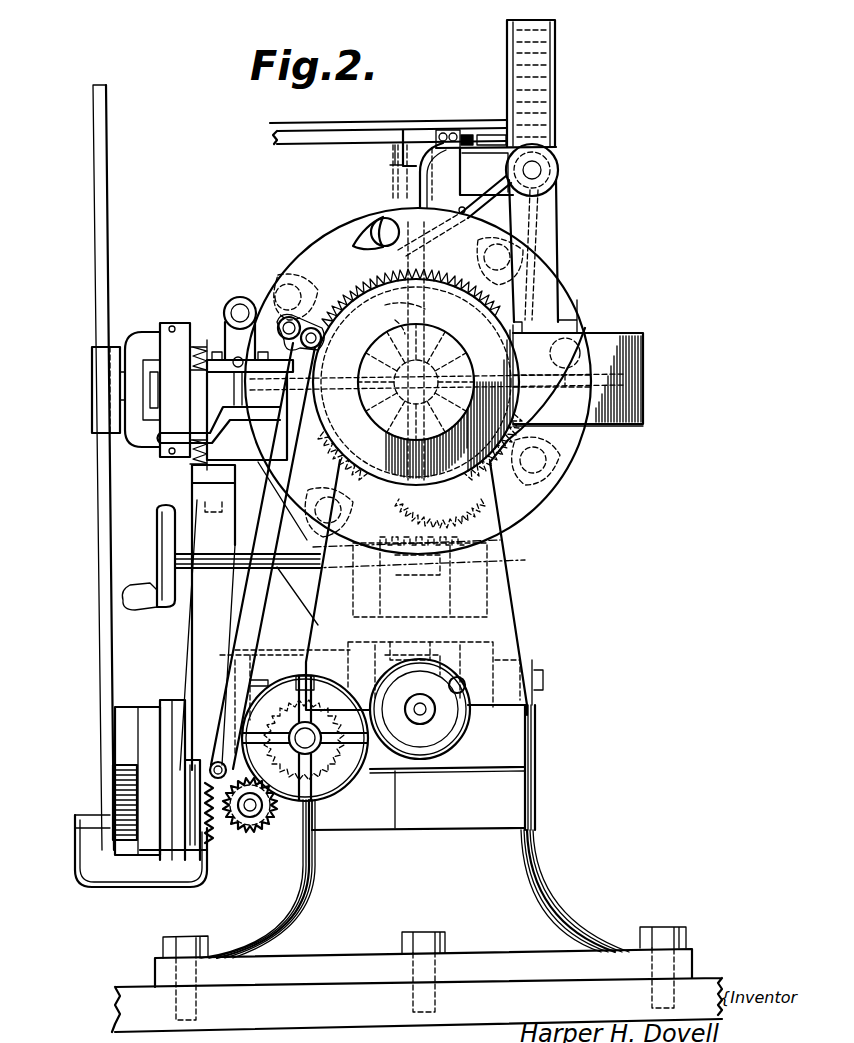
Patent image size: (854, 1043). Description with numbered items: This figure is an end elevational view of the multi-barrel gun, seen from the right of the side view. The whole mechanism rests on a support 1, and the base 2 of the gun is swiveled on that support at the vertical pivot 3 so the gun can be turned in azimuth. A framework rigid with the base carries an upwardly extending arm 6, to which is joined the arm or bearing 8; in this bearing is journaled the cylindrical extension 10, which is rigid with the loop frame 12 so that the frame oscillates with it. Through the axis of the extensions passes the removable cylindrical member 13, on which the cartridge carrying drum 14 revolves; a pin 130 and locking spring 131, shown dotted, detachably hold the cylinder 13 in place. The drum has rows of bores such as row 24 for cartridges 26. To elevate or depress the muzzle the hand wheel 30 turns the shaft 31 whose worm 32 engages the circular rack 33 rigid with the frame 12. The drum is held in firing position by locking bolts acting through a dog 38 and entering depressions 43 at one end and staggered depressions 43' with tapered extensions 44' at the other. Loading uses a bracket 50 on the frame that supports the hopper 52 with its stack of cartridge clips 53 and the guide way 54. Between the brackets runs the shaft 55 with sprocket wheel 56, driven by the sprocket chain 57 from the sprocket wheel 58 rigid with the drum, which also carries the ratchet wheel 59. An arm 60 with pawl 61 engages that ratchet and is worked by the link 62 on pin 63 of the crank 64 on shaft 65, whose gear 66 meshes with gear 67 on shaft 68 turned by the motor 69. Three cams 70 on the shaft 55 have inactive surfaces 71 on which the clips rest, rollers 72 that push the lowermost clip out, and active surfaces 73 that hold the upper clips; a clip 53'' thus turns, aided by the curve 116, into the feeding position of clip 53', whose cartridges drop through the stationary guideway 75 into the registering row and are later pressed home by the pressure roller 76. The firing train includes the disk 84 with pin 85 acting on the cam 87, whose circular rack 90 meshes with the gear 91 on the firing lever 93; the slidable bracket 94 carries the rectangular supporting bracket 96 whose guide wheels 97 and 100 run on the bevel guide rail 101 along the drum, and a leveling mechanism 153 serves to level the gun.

The support 1 is at (528, 888).
The base 2 is at (536, 738).
The swivel pivot 3 is at (522, 770).
The upwardly extending arm 6 is at (505, 583).
The arm or bearing 8 is at (500, 400).
The cylindrical extension 10 is at (462, 376).
The frame 12 is at (632, 352).
The removable cylindrical member 13 is at (398, 392).
The cartridge carrying drum 14 is at (318, 256).
The row of bores 24 is at (428, 351).
The cartridges 26 is at (470, 176).
The hand wheel 30 is at (160, 534).
The shaft 31 is at (292, 563).
The worm 32 is at (420, 622).
The circular rack 33 is at (419, 533).
The dog 38 is at (222, 412).
The locking notches or depressions 43 is at (417, 367).
The depressions 43' is at (383, 212).
The tapered extensions 44' is at (348, 224).
The bracket 50 is at (545, 300).
The hopper 52 is at (556, 112).
The cartridge clips 53 is at (558, 83).
The clip in feeding position 53' is at (387, 152).
The succeeding clip 53'' is at (483, 114).
The guide way 54 is at (405, 122).
The shaft 55 is at (545, 176).
The sprocket wheel 56 is at (552, 202).
The sprocket chain 57 is at (470, 200).
The sprocket wheel 58 is at (426, 444).
The ratchet wheel 59 is at (432, 272).
The arm 60 is at (437, 382).
The pawl 61 is at (262, 358).
The link 62 is at (270, 513).
The pin 63 is at (219, 697).
The crank 64 is at (225, 810).
The shaft 65 is at (258, 815).
The gear 66 is at (246, 838).
The gear 67 is at (332, 790).
The shaft 68 is at (310, 743).
The motor 69 is at (348, 776).
The cams 70 is at (558, 166).
The inactive surfaces 71 is at (525, 152).
The rollers 72 is at (550, 140).
The raised or active surfaces 73 is at (558, 154).
The stationary guideway 75 is at (414, 176).
The pressure roller 76 is at (230, 304).
The disk 84 is at (178, 830).
The pin 85 is at (160, 860).
The cam 87 is at (150, 727).
The circular rack 90 is at (118, 738).
The gear 91 is at (118, 800).
The firing lever 93 is at (104, 254).
The slidable bracket 94 is at (92, 364).
The rectangular supporting bracket 96 is at (150, 338).
The guide wheel 97 is at (200, 462).
The guide wheel 100 is at (168, 323).
The bevel guide rail 101 is at (170, 425).
The curve 116 is at (468, 140).
The pin 130 is at (378, 321).
The locking spring 131 is at (401, 297).
The leveling mechanism 153 is at (455, 691).